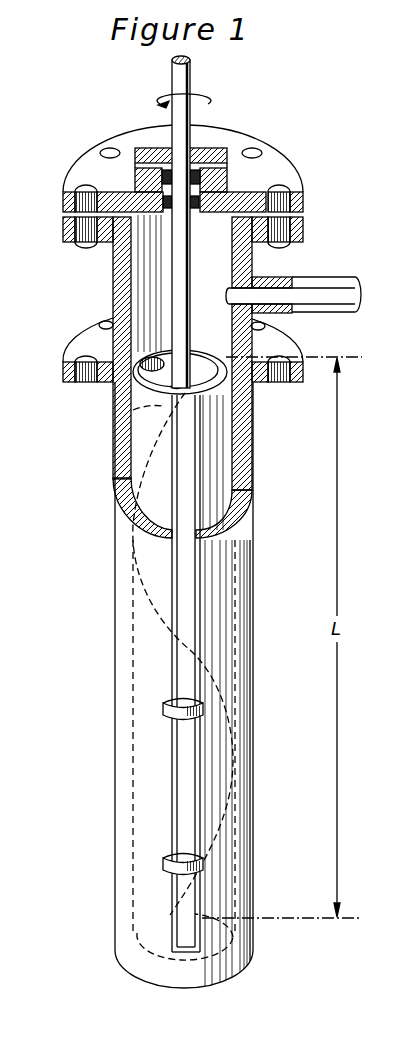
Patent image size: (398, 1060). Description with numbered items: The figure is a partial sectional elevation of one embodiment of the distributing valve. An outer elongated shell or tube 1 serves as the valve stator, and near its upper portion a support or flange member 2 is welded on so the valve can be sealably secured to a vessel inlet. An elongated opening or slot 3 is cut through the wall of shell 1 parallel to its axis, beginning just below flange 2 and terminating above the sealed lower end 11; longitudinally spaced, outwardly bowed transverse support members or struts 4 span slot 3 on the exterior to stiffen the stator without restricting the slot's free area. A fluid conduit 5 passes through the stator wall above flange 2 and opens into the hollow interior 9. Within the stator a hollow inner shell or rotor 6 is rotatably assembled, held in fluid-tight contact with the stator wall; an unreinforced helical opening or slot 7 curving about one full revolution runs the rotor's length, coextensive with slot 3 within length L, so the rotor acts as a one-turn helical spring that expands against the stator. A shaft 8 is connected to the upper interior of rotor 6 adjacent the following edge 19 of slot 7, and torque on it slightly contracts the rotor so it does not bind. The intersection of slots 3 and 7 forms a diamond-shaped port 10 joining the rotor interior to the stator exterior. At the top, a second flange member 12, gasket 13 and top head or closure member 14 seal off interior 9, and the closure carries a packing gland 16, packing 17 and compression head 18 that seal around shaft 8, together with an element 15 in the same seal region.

The outer elongated shell 1 is at (115, 600).
The support or flange member 2 is at (88, 323).
The elongated opening or slot 3 is at (185, 779).
The transverse support members or struts 4 is at (173, 714).
The fluid conduit 5 is at (320, 274).
The hollow inner shell or rotor 6 is at (140, 440).
The elongated helical opening or slot 7 is at (157, 442).
The shaft 8 is at (192, 77).
The hollow interior 9 is at (210, 268).
The diamond-shaped opening or port 10 is at (187, 646).
The sealed lower end 11 is at (157, 985).
The second flange member 12 is at (63, 226).
The gasket 13 is at (143, 208).
The top head or closure member 14 is at (86, 166).
The packing ring 15 is at (212, 193).
The packing gland 16 is at (224, 174).
The packing 17 is at (158, 167).
The compression head 18 is at (210, 128).
The following edge 19 is at (222, 355).